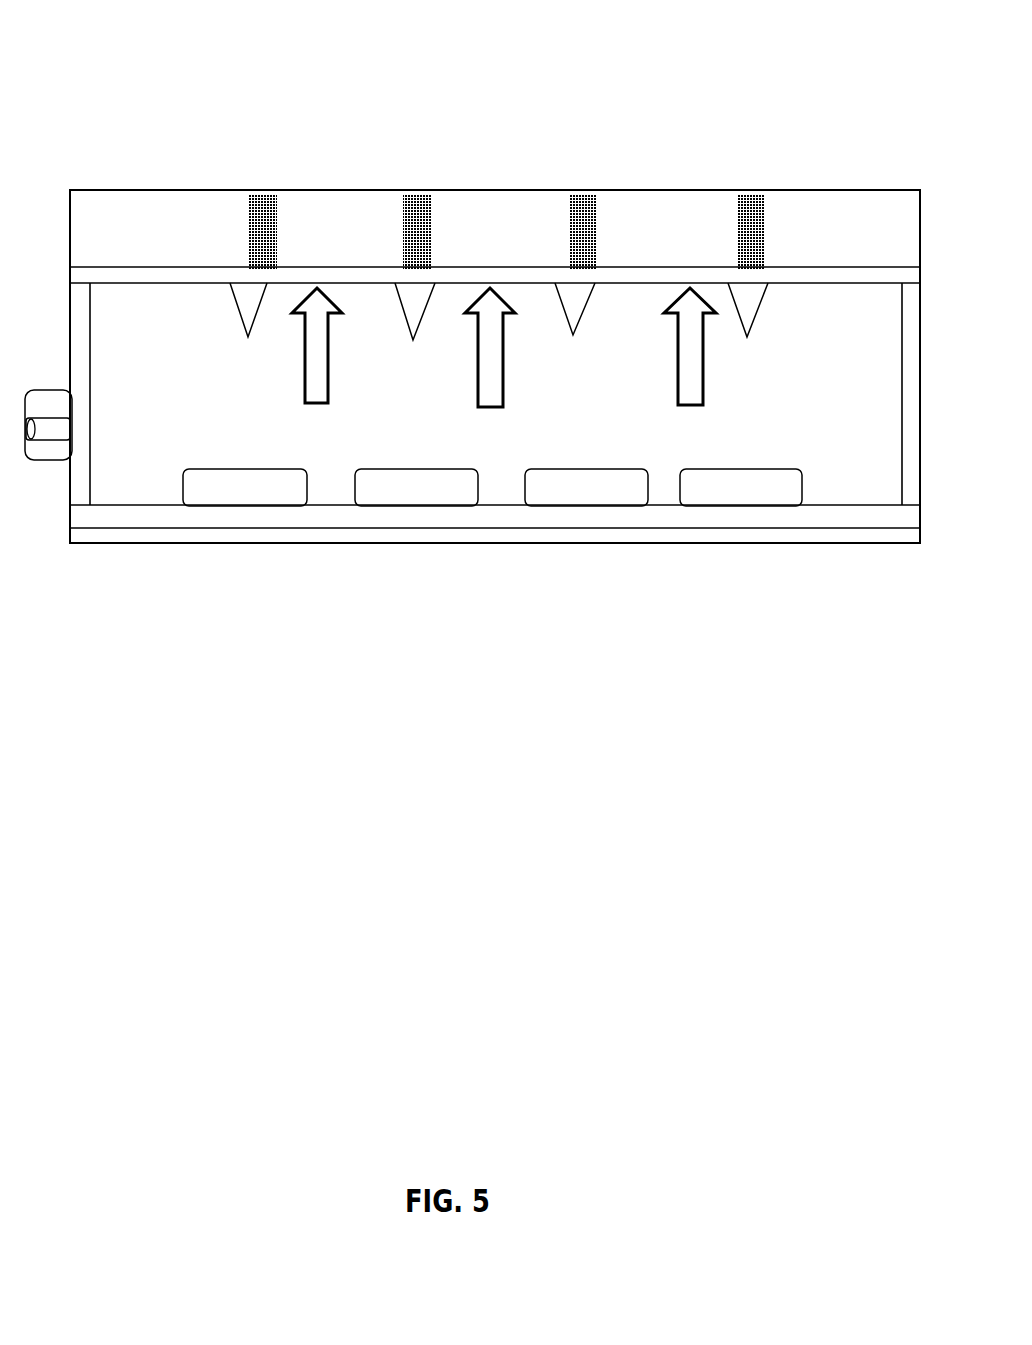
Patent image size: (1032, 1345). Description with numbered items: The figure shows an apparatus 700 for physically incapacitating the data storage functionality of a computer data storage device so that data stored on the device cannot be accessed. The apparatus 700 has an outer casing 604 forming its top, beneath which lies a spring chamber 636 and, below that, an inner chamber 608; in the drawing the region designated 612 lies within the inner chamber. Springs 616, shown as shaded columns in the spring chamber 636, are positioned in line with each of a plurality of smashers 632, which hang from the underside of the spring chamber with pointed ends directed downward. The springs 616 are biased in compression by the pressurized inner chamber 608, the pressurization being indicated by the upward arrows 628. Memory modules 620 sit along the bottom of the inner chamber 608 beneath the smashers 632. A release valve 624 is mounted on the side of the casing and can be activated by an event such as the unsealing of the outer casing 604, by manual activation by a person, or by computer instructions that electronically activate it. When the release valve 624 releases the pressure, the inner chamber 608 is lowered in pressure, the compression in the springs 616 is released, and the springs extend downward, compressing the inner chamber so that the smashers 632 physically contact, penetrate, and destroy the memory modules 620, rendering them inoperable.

The apparatus 700 is at (123, 132).
The outer casing 604 is at (185, 190).
The spring chamber 636 is at (520, 228).
The inner chamber 608 is at (855, 313).
The cavity 612 is at (780, 330).
The springs 616 is at (262, 197).
The smashers 632 is at (247, 298).
The arrows 628 is at (325, 345).
The memory modules 620 is at (248, 478).
The release valve 624 is at (48, 462).